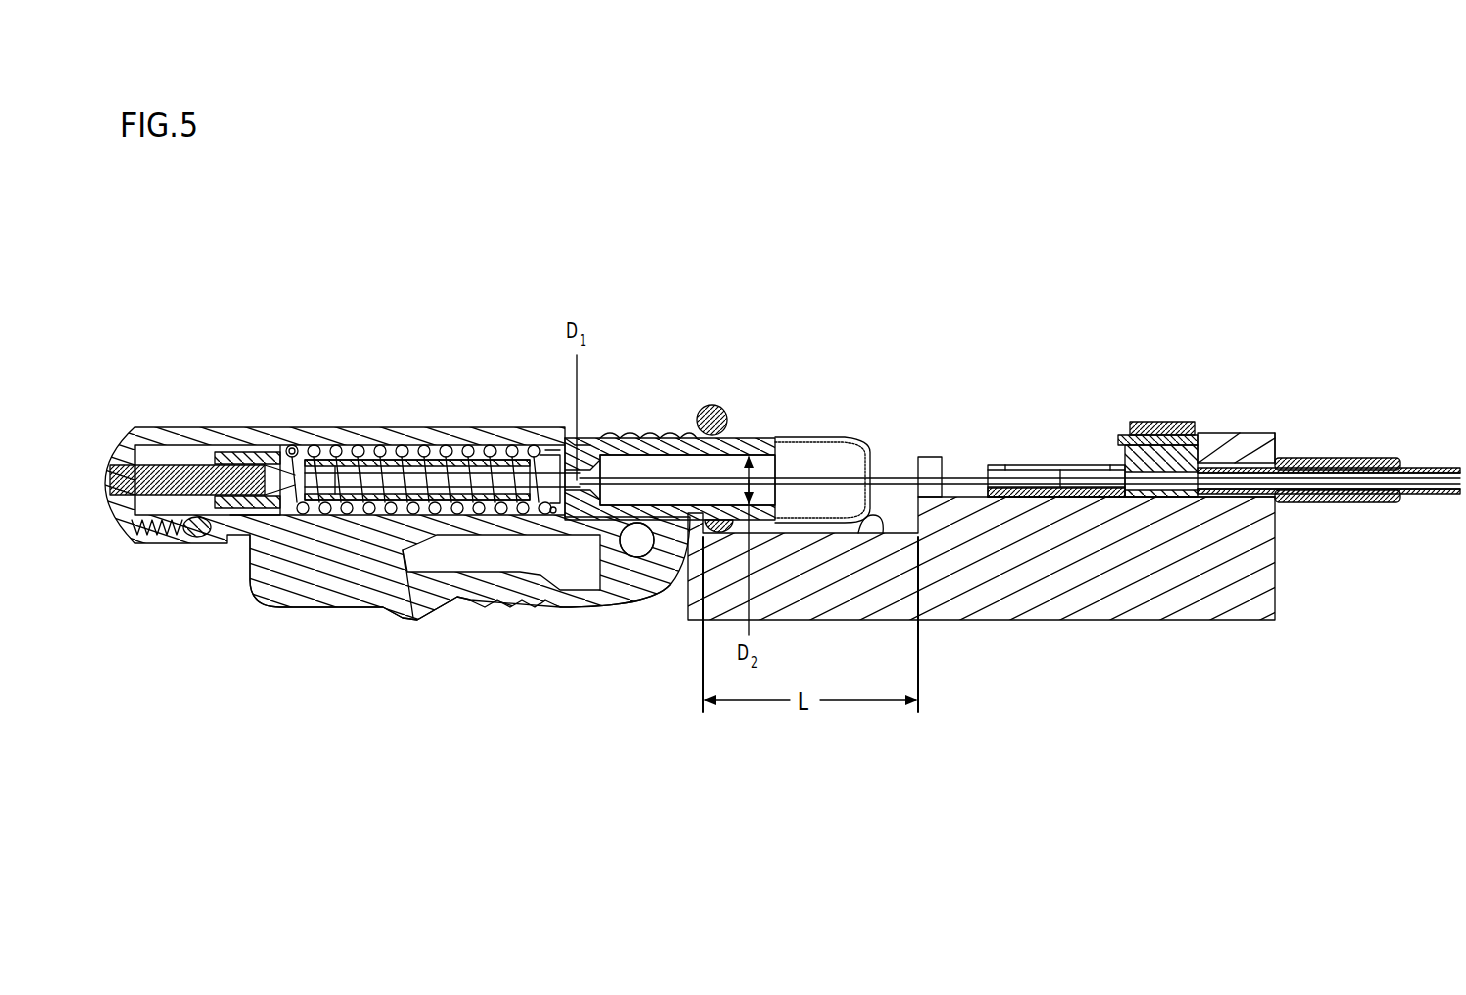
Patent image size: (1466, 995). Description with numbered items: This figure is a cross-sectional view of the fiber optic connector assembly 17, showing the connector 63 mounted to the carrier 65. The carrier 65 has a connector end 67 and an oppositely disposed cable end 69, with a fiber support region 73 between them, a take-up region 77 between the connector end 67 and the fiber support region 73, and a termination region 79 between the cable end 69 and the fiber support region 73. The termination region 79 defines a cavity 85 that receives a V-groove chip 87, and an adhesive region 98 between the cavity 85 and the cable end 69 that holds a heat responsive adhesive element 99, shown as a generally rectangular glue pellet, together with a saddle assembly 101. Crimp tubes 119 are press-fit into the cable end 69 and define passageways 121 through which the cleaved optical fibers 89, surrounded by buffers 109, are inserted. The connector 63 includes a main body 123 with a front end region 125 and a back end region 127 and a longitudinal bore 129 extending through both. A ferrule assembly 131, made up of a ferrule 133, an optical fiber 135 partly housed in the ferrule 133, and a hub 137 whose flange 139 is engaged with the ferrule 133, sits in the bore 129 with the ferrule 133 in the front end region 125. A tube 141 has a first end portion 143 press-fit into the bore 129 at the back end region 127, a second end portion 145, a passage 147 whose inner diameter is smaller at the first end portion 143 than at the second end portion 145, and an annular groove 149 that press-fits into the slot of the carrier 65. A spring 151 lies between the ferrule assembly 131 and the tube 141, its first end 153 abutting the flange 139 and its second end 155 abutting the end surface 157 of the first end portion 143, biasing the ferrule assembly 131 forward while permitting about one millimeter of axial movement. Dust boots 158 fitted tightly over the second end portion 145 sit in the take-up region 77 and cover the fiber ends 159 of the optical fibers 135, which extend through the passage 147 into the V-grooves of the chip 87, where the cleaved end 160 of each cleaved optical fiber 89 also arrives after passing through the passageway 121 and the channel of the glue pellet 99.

The cryosurgical probe assembly 17 is at (742, 305).
The connector 63 is at (549, 382).
The carrier 65 is at (1082, 364).
The connector end 67 is at (688, 597).
The cable end 69 is at (1276, 444).
The fiber support region 73 is at (940, 458).
The take-up region 77 is at (872, 522).
The termination region 79 is at (1090, 503).
The cavity 85 is at (1035, 498).
The V-groove chip 87 is at (1065, 463).
The cleaved optical fibers 89 is at (1132, 462).
The adhesive region 98 is at (1220, 500).
The heat responsive adhesive element 99 is at (1205, 450).
The saddle assembly 101 is at (1190, 423).
The buffers 109 is at (1422, 468).
The crimp tubes 119 is at (1362, 458).
The passageways 121 is at (1328, 495).
The main body 123 is at (280, 607).
The front end region 125 is at (167, 427).
The back end region 127 is at (680, 437).
The longitudinal bore 129 is at (436, 445).
The ferrule assembly 131 is at (238, 512).
The ferrule 133 is at (190, 462).
The optical fiber 135 is at (268, 452).
The hub 137 is at (372, 460).
The flange 139 is at (272, 512).
The tube 141 is at (643, 528).
The first end portion 143 is at (602, 438).
The second end portion 145 is at (775, 440).
The passage 147 is at (732, 470).
The annular groove 149 is at (716, 406).
The spring 151 is at (452, 450).
The first end 153 is at (292, 446).
The second end 155 is at (548, 512).
The end surface 157 is at (556, 515).
The dust boots 158 is at (852, 438).
The fiber ends 159 is at (1048, 463).
The cleaved end 160 is at (1095, 463).